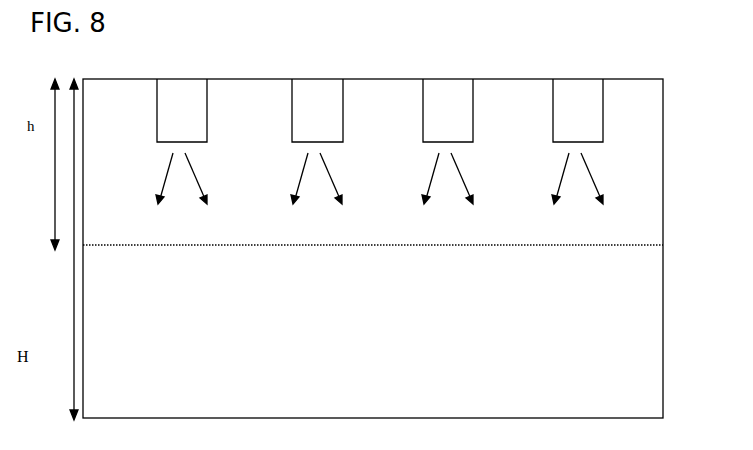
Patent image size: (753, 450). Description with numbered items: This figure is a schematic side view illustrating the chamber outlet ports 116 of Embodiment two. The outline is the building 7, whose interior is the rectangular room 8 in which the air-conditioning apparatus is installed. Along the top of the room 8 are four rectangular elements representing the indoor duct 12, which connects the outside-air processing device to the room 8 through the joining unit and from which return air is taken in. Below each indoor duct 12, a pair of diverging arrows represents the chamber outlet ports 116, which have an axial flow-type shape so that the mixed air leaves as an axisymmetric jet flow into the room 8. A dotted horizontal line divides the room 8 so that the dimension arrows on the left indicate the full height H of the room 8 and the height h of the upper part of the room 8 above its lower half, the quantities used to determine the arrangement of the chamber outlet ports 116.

The building 7 is at (663, 295).
The room 8 is at (655, 230).
The indoor duct 12 is at (203, 112).
The chamber outlet ports 116 is at (200, 142).